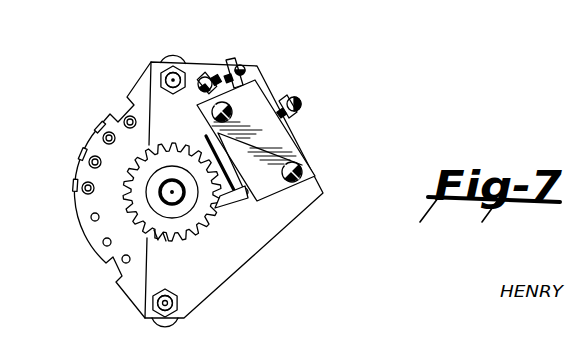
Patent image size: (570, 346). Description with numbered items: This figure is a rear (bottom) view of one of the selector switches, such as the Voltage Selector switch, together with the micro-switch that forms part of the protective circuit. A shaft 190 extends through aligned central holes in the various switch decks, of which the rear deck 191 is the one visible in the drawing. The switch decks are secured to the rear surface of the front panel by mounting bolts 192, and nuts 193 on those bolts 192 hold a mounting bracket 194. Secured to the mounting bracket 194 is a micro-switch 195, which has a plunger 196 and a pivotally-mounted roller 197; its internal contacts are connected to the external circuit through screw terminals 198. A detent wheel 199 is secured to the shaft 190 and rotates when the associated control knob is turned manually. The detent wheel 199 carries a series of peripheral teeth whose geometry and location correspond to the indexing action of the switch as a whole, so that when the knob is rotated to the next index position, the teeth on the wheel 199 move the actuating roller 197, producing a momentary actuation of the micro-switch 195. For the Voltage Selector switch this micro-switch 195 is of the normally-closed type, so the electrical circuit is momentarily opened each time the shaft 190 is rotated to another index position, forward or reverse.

The shaft 190 is at (172, 188).
The rear deck 191 is at (92, 143).
The mounting bolts 192 is at (172, 80).
The nuts 193 is at (172, 71).
The mounting bracket 194 is at (293, 212).
The micro-switch 195 is at (273, 147).
The plunger 196 is at (245, 198).
The roller 197 is at (222, 212).
The screw terminals 198 is at (236, 65).
The detent wheel 199 is at (162, 228).